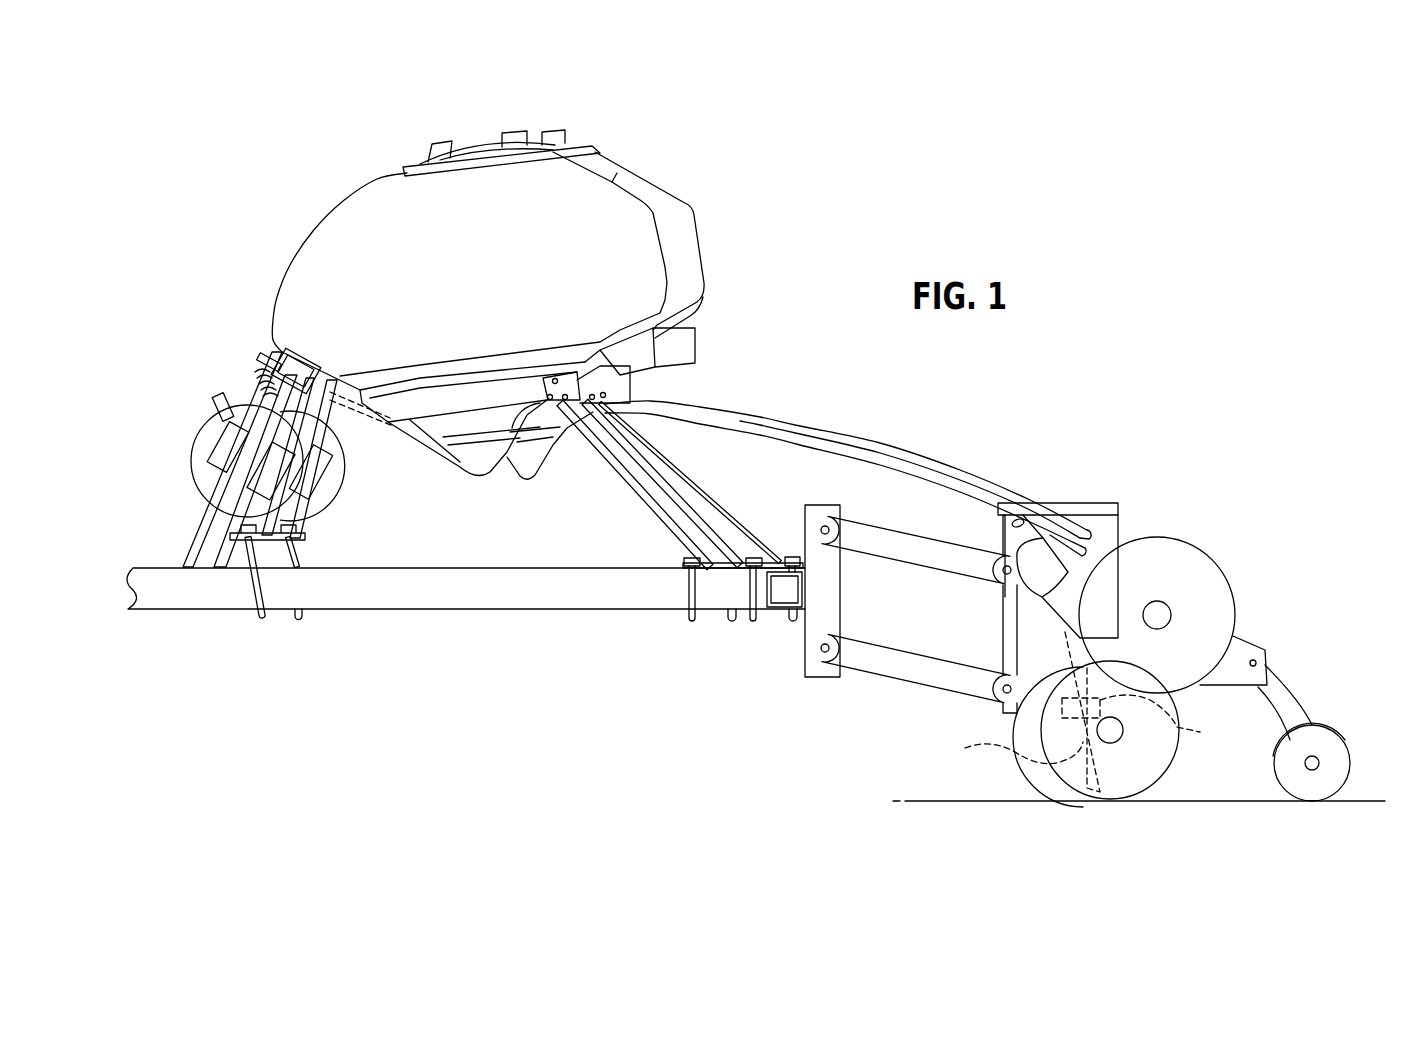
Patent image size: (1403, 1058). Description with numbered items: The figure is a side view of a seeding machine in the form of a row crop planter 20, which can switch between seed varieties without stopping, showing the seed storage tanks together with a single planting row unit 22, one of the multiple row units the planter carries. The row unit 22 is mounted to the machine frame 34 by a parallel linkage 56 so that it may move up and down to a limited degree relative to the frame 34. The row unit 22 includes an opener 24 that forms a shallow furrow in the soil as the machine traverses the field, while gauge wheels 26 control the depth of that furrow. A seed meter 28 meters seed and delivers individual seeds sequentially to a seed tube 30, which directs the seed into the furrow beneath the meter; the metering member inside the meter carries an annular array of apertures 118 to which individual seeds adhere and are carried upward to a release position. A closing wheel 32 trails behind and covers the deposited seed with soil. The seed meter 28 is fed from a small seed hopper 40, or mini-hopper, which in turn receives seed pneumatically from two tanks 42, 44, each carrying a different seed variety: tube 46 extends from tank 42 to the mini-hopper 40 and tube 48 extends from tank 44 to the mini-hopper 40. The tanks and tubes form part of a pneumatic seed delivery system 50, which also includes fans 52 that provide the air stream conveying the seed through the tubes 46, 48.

The row crop planter 20 is at (623, 663).
The planting row unit 22 is at (1189, 484).
The opener 24 is at (1022, 778).
The gauge wheels 26 is at (1167, 770).
The seed meter 28 is at (1230, 581).
The seed tube 30 is at (1020, 712).
The closing wheel 32 is at (1350, 776).
The machine frame 34 is at (422, 612).
The seed hopper 40 is at (1133, 518).
The tank 42 is at (614, 171).
The tank 44 is at (690, 203).
The tube 46 is at (842, 455).
The tube 48 is at (962, 466).
The pneumatic seed delivery system 50 is at (444, 497).
The fan 52 is at (192, 447).
The parallel linkage 56 is at (858, 713).
The apertures 118 is at (1150, 721).